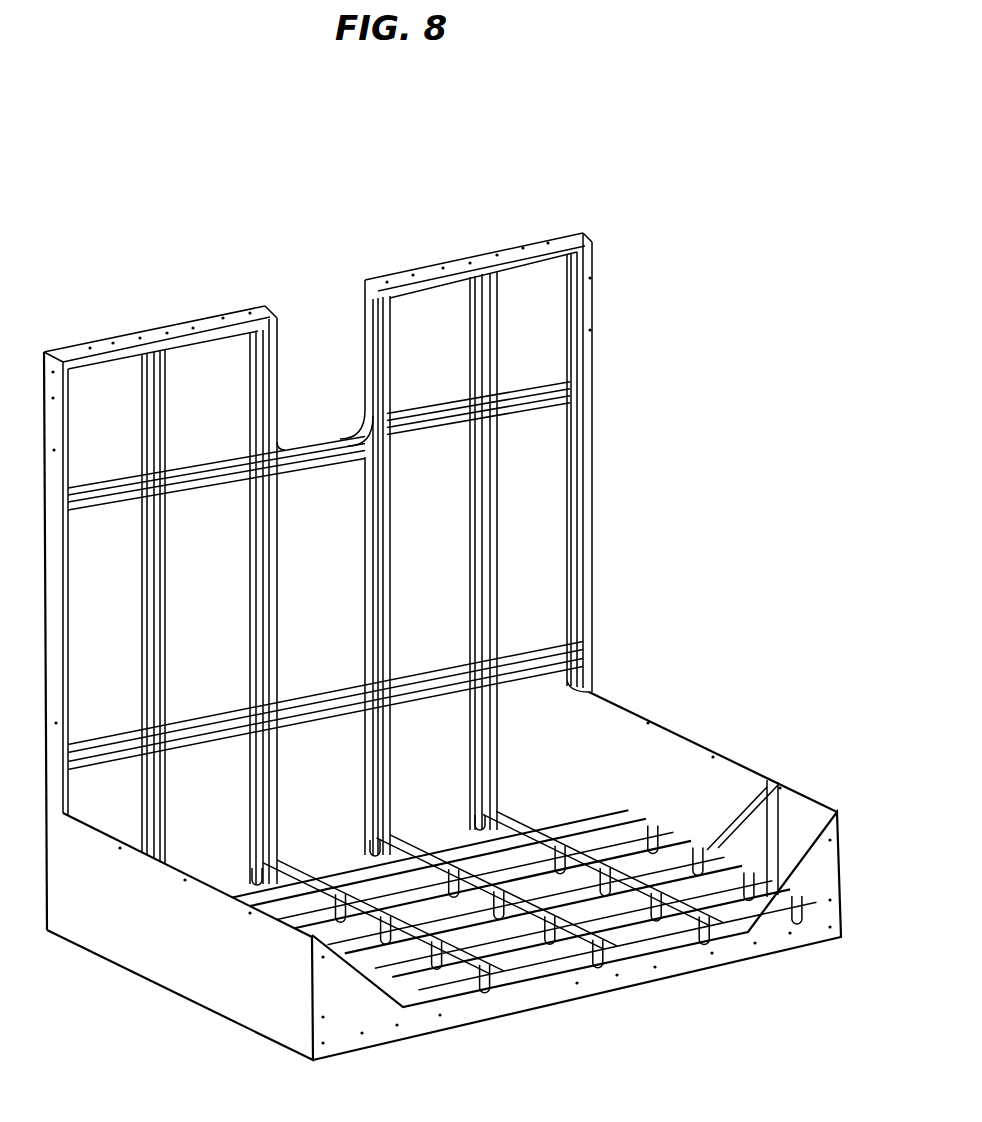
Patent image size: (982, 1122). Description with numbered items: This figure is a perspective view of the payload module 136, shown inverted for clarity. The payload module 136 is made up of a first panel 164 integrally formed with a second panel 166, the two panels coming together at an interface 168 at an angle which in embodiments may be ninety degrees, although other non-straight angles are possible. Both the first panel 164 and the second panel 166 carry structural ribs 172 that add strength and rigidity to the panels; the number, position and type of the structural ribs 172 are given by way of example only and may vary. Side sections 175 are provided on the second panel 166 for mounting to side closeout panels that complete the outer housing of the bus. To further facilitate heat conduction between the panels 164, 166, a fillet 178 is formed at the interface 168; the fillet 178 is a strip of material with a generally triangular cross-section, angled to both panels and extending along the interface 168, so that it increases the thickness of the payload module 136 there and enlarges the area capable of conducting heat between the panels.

The payload module 136 is at (713, 282).
The first panel 164 is at (540, 520).
The second panel 166 is at (628, 855).
The interface 168 is at (453, 830).
The structural ribs 172 is at (497, 508).
The side sections 175 is at (803, 787).
The fillet 178 is at (547, 810).